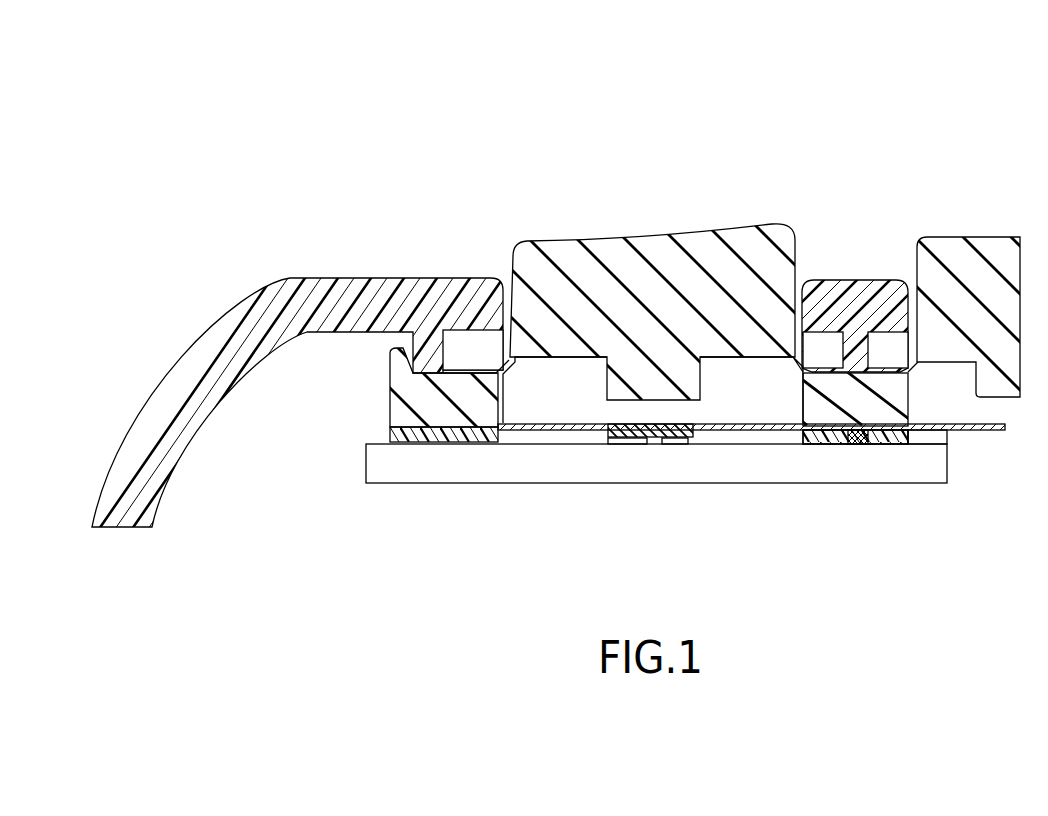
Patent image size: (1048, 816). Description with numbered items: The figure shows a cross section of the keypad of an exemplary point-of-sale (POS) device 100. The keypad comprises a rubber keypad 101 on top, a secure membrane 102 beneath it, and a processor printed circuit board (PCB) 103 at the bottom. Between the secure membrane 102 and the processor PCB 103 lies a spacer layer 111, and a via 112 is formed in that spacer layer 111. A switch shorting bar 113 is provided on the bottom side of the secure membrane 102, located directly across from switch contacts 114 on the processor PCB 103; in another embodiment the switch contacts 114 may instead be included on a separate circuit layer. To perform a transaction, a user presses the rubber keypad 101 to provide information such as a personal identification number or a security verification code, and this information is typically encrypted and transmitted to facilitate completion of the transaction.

The point-of-sale device 100 is at (449, 118).
The rubber keypad 101 is at (609, 240).
The secure membrane 102 is at (984, 431).
The processor printed circuit board 103 is at (457, 484).
The spacer layer 111 is at (885, 445).
The via 112 is at (855, 445).
The switch shorting bar 113 is at (694, 446).
The switch contacts 114 is at (631, 445).